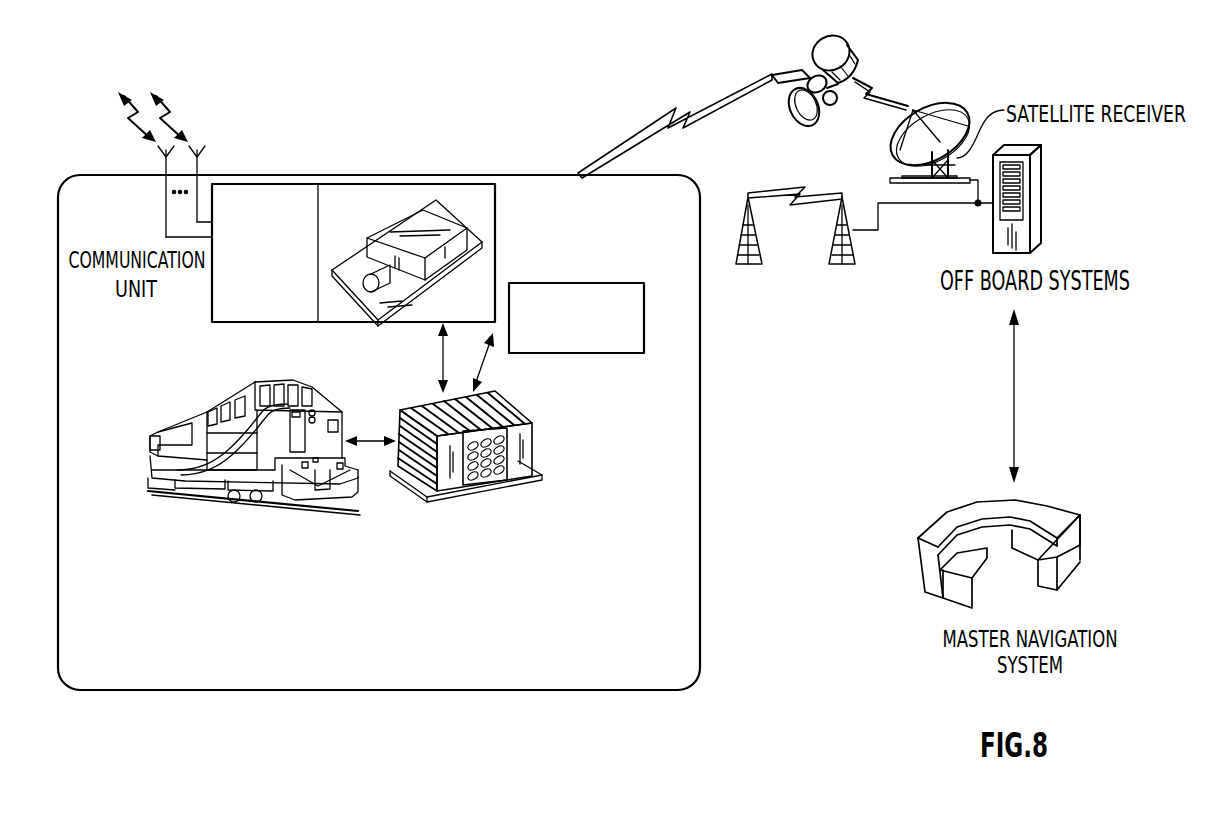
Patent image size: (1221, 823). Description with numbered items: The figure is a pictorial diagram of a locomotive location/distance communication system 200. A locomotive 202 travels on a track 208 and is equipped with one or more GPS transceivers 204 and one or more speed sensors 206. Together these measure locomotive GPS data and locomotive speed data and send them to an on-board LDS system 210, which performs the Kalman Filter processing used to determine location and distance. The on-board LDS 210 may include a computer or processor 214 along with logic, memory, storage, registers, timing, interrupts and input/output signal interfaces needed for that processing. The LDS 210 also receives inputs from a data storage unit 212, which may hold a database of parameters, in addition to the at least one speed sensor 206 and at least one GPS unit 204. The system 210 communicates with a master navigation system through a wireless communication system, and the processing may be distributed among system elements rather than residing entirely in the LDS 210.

The locomotive location/distance communication system 200 is at (378, 49).
The locomotive 202 is at (217, 407).
The GPS transceiver 204 is at (495, 257).
The speed sensor 206 is at (235, 512).
The track 208 is at (325, 522).
The on-board LDS system 210 is at (540, 455).
The data storage unit 212 is at (575, 353).
The computer or processor 214 is at (548, 432).